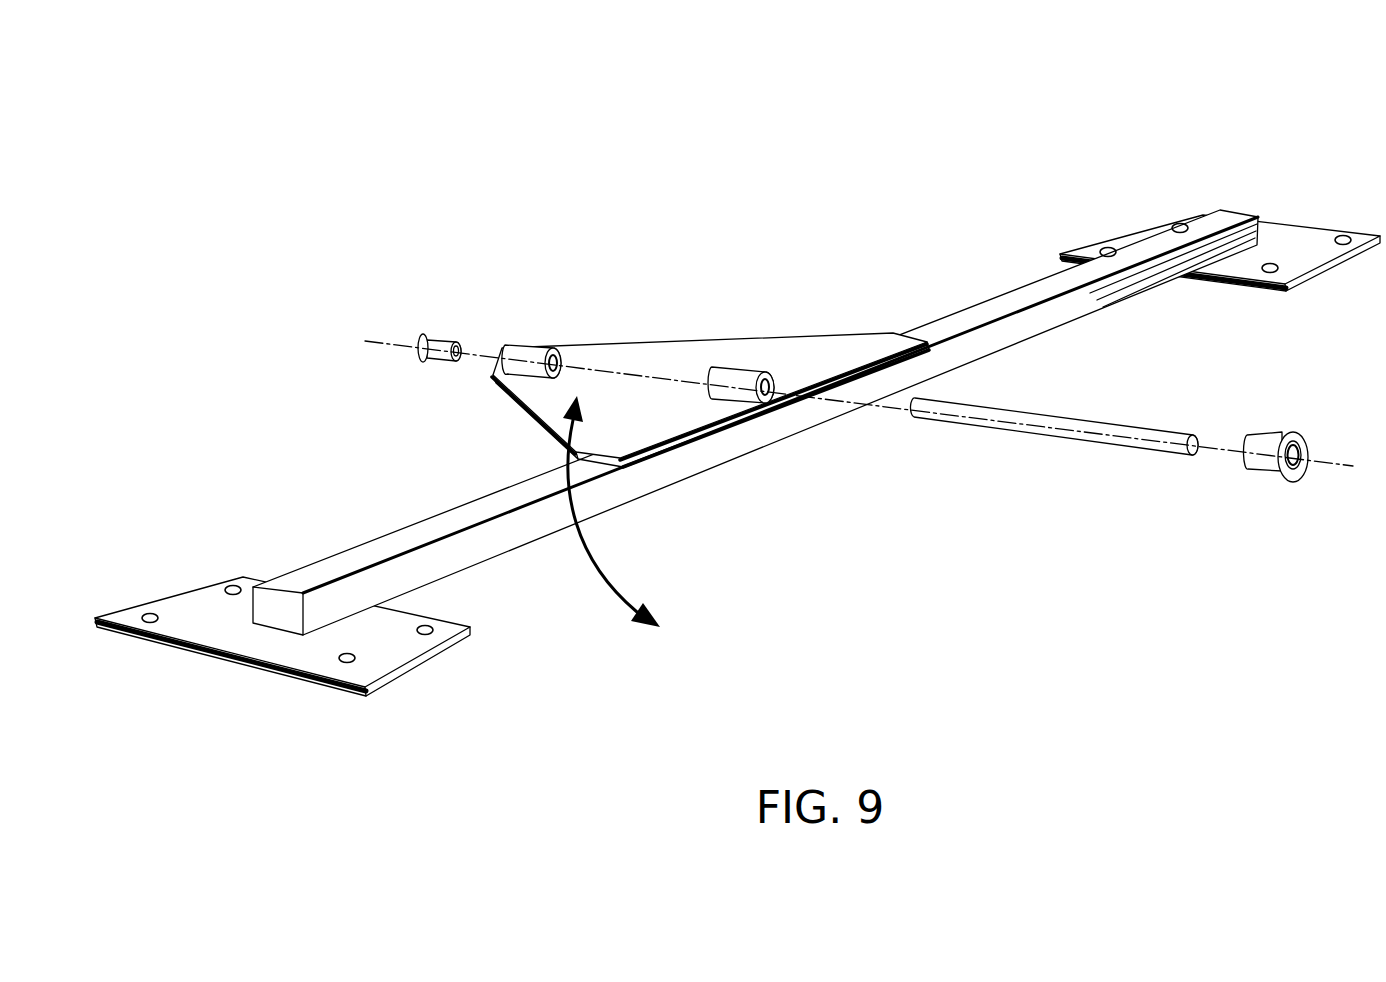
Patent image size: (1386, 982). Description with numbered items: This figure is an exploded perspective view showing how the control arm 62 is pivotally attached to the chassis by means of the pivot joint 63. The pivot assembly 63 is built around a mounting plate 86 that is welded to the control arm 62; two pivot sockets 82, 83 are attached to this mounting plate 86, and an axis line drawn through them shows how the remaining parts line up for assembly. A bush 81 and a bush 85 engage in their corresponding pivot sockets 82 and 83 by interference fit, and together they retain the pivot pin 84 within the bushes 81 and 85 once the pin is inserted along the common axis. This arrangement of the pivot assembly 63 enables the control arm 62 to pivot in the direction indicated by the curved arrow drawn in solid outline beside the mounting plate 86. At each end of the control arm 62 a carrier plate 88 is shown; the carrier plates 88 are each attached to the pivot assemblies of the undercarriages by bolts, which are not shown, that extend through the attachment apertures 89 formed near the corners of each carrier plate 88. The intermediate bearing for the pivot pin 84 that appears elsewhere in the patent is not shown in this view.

The control arm 62 is at (1067, 305).
The pivot joint 63 is at (683, 297).
The bush 81 is at (445, 333).
The pivot socket 82 is at (523, 347).
The pivot socket 83 is at (743, 377).
The pivot pin 84 is at (1027, 428).
The bush 85 is at (1250, 468).
The mounting plate 86 is at (633, 430).
The carrier plate 88 is at (398, 620).
The attachment aperture 89 is at (347, 653).